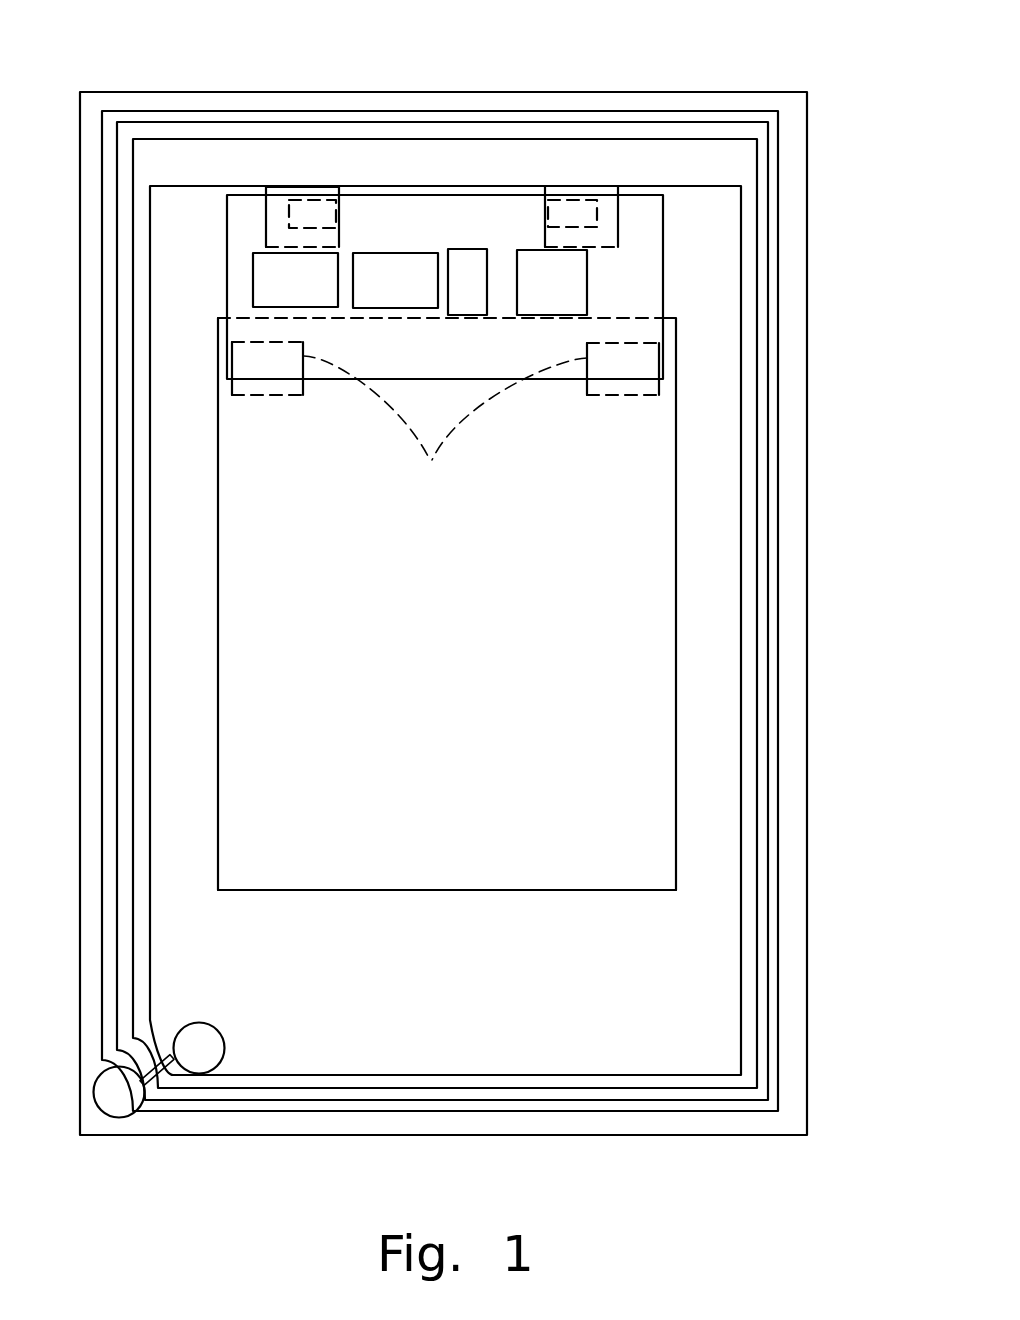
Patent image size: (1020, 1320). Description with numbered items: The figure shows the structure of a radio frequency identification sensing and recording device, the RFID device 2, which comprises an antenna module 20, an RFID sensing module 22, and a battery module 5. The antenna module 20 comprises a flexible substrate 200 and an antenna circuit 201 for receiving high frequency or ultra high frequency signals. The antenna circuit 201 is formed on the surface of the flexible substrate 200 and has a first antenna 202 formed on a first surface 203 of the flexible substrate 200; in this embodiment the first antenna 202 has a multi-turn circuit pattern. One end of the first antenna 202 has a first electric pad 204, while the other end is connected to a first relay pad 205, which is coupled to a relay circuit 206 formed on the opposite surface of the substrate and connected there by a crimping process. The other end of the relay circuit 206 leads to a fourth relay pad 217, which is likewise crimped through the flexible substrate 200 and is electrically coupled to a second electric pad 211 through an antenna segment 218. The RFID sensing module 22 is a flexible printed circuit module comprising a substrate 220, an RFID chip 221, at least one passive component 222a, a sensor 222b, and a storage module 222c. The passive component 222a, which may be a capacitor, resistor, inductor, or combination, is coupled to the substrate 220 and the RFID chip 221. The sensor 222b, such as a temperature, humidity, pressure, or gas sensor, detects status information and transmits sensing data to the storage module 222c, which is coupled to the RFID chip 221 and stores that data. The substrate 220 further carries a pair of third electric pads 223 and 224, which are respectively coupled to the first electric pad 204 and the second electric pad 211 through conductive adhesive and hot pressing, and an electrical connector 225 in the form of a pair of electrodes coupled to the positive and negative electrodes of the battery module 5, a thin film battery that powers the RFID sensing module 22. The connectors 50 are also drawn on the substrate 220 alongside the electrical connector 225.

The RFID device 2 is at (486, 578).
The antenna module 20 is at (478, 86).
The flexible substrate 200 is at (790, 620).
The antenna circuit 201 is at (163, 997).
The first antenna 202 is at (692, 1112).
The first surface 203 is at (493, 1024).
The first electric pad 204 is at (573, 188).
The first relay pad 205 is at (117, 1107).
The relay circuit 206 is at (176, 1081).
The second electric pad 211 is at (290, 192).
The fourth relay pad 217 is at (220, 1040).
The antenna segment 218 is at (150, 688).
The RFID sensing module 22 is at (442, 313).
The substrate 220 is at (652, 297).
The RFID chip 221 is at (262, 297).
The passive component 222a is at (577, 290).
The sensor 222b is at (468, 253).
The storage module 222c is at (368, 260).
The third electric pad 223 is at (598, 220).
The third electric pad 224 is at (287, 219).
The electrical connector 225 is at (445, 424).
The battery module 5 is at (345, 872).
The connectors 50 is at (265, 388).